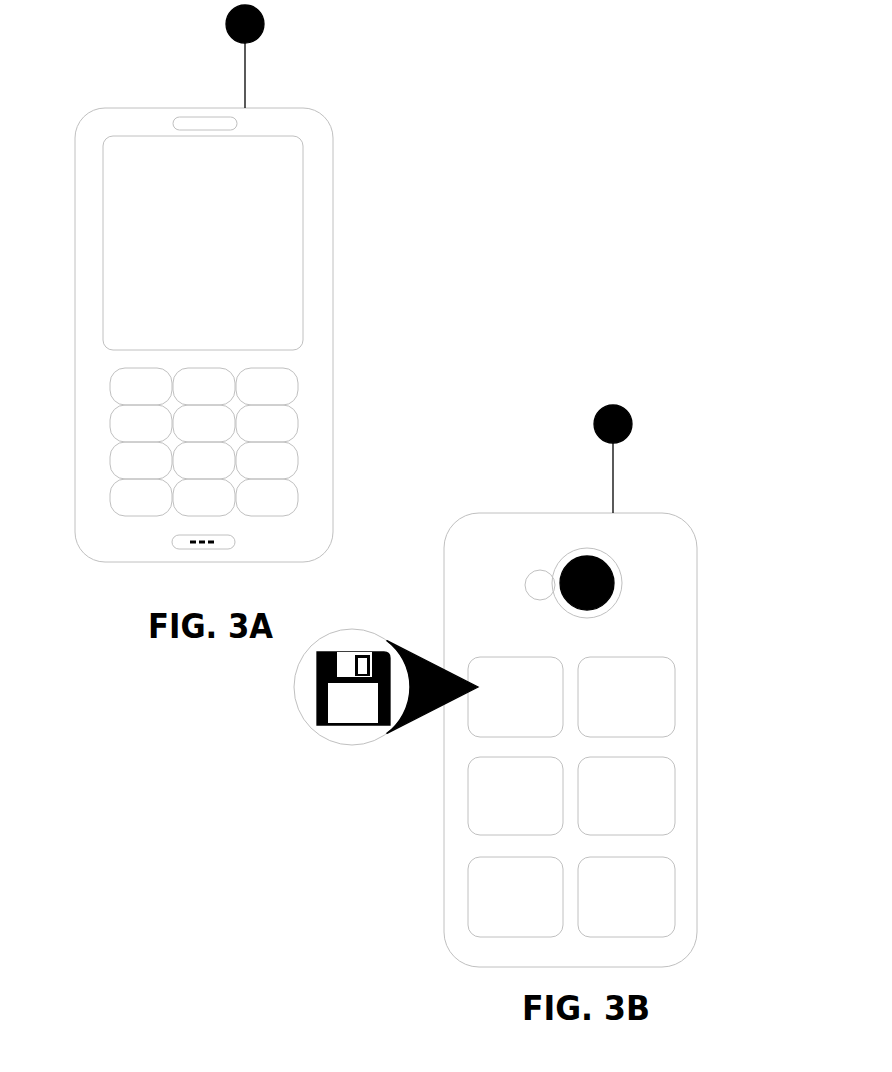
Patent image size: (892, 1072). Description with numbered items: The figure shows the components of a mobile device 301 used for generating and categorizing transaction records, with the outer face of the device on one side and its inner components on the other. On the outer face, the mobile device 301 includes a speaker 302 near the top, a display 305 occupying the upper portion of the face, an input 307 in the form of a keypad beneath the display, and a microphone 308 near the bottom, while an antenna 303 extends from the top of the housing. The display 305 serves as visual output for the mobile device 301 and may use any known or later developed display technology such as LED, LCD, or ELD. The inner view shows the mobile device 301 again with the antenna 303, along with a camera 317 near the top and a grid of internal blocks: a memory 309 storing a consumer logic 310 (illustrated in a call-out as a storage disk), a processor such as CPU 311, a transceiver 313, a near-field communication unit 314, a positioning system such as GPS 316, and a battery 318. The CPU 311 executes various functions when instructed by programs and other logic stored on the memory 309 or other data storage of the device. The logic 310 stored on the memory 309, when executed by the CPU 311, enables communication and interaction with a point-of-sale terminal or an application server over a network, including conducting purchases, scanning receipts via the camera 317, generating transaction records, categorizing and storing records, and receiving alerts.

In FIG. 3A, the mobile device 301 is at (181, 317).
In FIG. 3B, the mobile device 301 is at (570, 721).
In FIG. 3A, the speaker 302 is at (186, 102).
In FIG. 3A, the antenna 303 is at (282, 56).
In FIG. 3B, the antenna 303 is at (650, 459).
In FIG. 3A, the display 305 is at (259, 243).
In FIG. 3A, the input 307 is at (259, 442).
In FIG. 3A, the microphone 308 is at (163, 569).
In FIG. 3B, the memory 309 is at (458, 668).
In FIG. 3B, the consumer logic 310 is at (386, 687).
In FIG. 3B, the CPU 311 is at (459, 793).
In FIG. 3B, the transceiver 313 is at (680, 689).
In FIG. 3B, the near-field communication unit 314 is at (682, 784).
In FIG. 3B, the GPS 316 is at (459, 893).
In FIG. 3B, the camera 317 is at (650, 583).
In FIG. 3B, the battery 318 is at (683, 889).